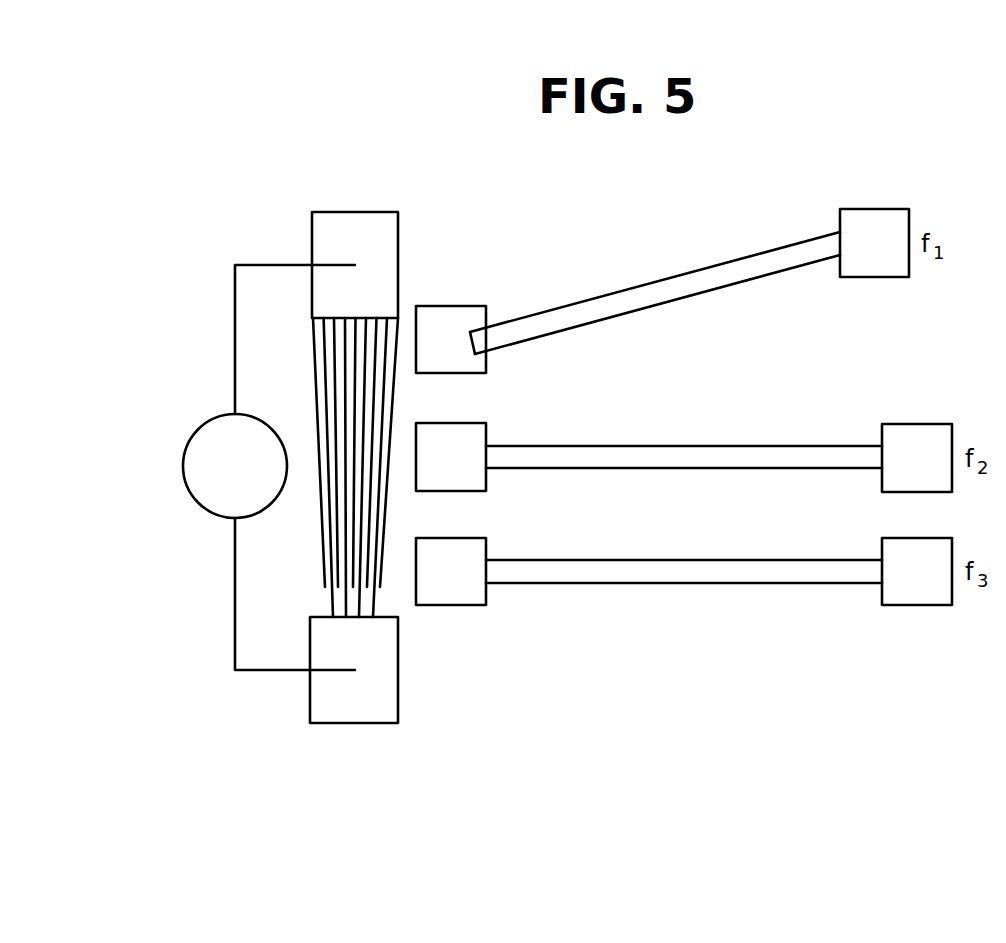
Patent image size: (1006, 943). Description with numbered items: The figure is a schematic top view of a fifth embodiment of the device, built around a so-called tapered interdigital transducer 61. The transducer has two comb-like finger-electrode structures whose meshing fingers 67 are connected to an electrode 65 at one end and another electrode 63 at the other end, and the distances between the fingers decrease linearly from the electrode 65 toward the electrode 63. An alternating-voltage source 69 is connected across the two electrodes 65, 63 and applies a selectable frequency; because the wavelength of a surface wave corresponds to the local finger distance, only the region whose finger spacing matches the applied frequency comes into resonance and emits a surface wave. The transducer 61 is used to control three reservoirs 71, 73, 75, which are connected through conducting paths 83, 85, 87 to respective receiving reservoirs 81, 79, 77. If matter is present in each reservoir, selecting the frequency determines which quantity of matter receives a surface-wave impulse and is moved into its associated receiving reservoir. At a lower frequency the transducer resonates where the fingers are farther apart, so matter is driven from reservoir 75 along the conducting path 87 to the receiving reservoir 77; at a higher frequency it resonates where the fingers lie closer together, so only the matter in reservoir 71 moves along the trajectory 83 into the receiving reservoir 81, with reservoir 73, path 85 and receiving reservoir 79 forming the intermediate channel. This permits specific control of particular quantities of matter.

The tapered interdigital transducer 61 is at (270, 748).
The electrode 63 is at (348, 713).
The electrode 65 is at (348, 222).
The meshing fingers 67 is at (313, 552).
The alternating-voltage source 69 is at (197, 468).
The reservoir 71 is at (458, 548).
The reservoir 73 is at (458, 433).
The reservoir 75 is at (455, 315).
The receiving reservoir 77 is at (868, 218).
The receiving reservoir 79 is at (910, 435).
The receiving reservoir 81 is at (910, 594).
The conducting path 83 is at (762, 575).
The conducting path 85 is at (762, 453).
The conducting path 87 is at (702, 256).